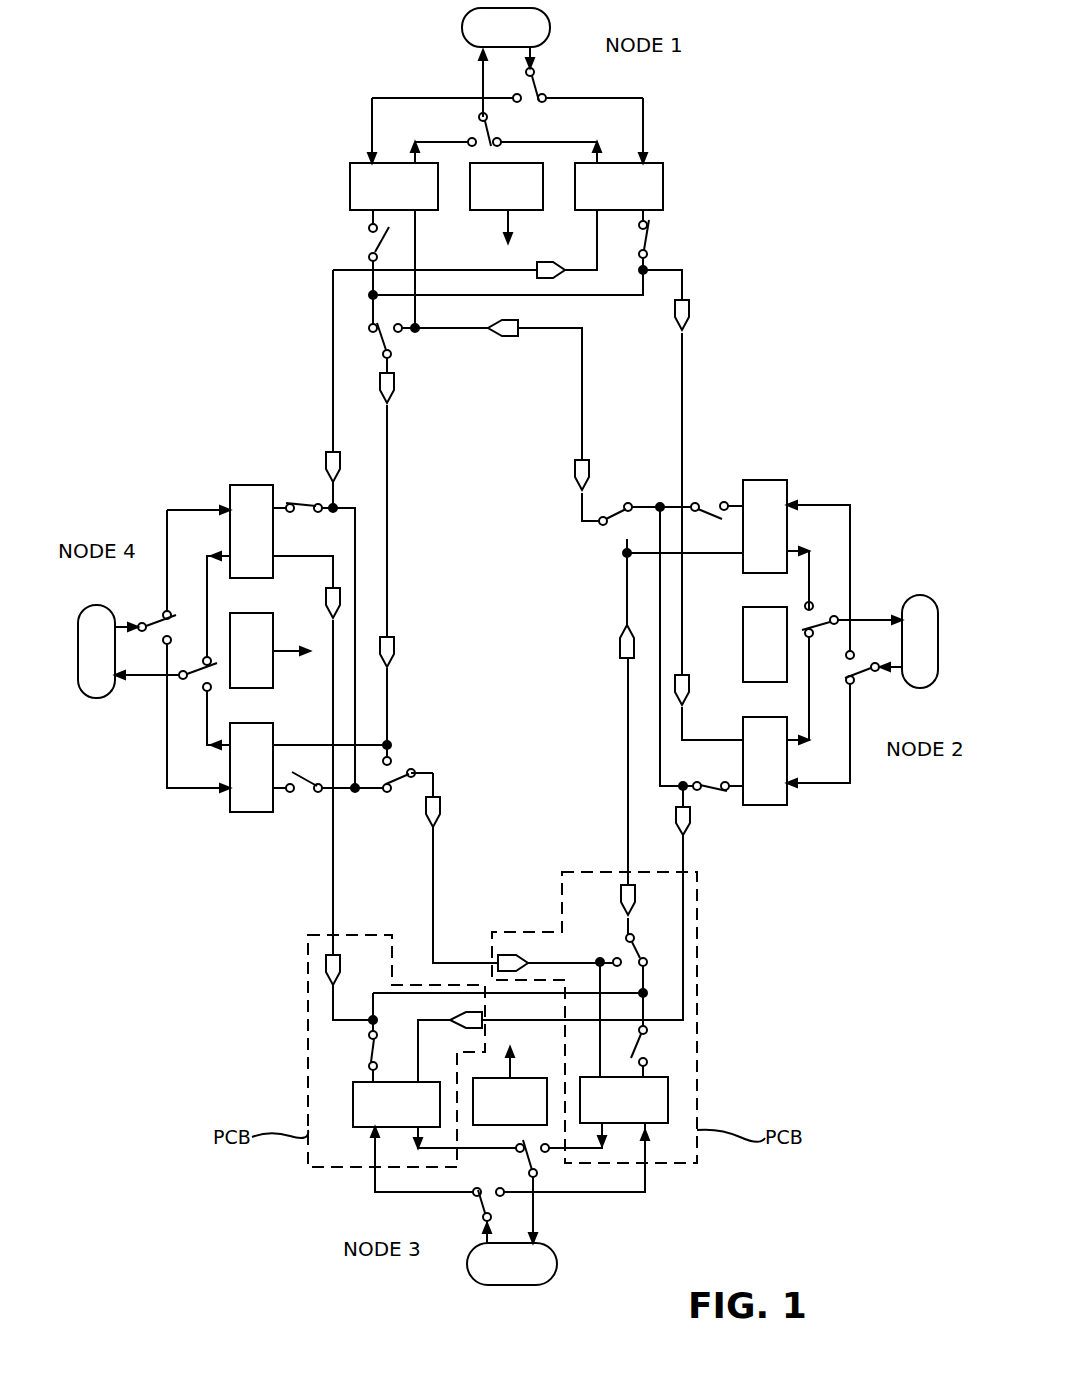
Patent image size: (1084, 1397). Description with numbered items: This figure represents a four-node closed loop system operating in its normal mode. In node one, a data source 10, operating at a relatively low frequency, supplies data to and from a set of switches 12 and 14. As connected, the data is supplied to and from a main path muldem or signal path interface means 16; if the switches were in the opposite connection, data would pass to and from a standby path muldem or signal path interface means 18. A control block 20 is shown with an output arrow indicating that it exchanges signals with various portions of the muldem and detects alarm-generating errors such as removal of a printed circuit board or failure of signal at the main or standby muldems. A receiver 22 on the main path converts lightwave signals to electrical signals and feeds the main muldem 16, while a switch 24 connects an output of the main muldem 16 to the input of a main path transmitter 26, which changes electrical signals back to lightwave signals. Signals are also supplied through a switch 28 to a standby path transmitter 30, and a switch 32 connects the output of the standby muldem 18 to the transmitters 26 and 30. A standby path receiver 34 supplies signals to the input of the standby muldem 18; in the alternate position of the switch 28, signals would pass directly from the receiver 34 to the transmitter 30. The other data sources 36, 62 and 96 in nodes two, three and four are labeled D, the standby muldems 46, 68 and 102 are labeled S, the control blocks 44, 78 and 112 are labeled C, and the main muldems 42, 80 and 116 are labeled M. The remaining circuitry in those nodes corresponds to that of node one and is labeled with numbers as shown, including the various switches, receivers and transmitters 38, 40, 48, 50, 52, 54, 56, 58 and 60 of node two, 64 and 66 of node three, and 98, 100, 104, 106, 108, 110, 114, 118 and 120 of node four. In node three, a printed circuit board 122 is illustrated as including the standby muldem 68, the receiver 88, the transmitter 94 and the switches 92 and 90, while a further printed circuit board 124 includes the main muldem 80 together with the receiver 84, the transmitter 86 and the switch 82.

The data source 10 is at (462, 27).
The switch 12 is at (548, 82).
The switch 14 is at (498, 127).
The main path muldem 16 is at (663, 187).
The standby path muldem 18 is at (350, 190).
The control block 20 is at (483, 210).
The receiver 22 is at (548, 262).
The switch 24 is at (660, 238).
The main path transmitter 26 is at (689, 307).
The switch 28 is at (402, 345).
The standby path transmitter 30 is at (394, 385).
The switch 32 is at (360, 240).
The standby path receiver 34 is at (503, 336).
The data source 36 is at (920, 595).
The switch 38 is at (866, 680).
The switch 40 is at (826, 608).
The main muldem 42 is at (768, 805).
The control block 44 is at (743, 610).
The standby muldem 46 is at (763, 480).
The switch 48 is at (707, 494).
The switch 50 is at (609, 498).
The buffer 52 is at (575, 486).
The buffer 54 is at (620, 646).
The buffer 56 is at (689, 690).
The switch 58 is at (714, 803).
The buffer 60 is at (678, 825).
The data source 62 is at (557, 1262).
The switch 64 is at (472, 1208).
The switch 66 is at (518, 1161).
The standby muldem 68 is at (668, 1100).
The control block 78 is at (525, 1078).
The main muldem 80 is at (353, 1127).
The switch 82 is at (362, 1052).
The receiver 84 is at (326, 968).
The transmitter 86 is at (456, 1028).
The receiver 88 is at (503, 955).
The switch 90 is at (655, 1045).
The switch 92 is at (620, 948).
The transmitter 94 is at (621, 900).
The data source 96 is at (97, 698).
The switch 98 is at (150, 614).
The switch 100 is at (194, 690).
The standby muldem 102 is at (250, 812).
The switch 104 is at (296, 803).
The switch 106 is at (403, 768).
The buffer 108 is at (440, 810).
The buffer 110 is at (394, 650).
The control block 112 is at (273, 665).
The buffer 114 is at (326, 600).
The main muldem 116 is at (253, 485).
The switch 118 is at (301, 492).
The buffer 120 is at (342, 468).
The printed circuit board 122 is at (678, 1168).
The printed circuit board 124 is at (318, 1172).